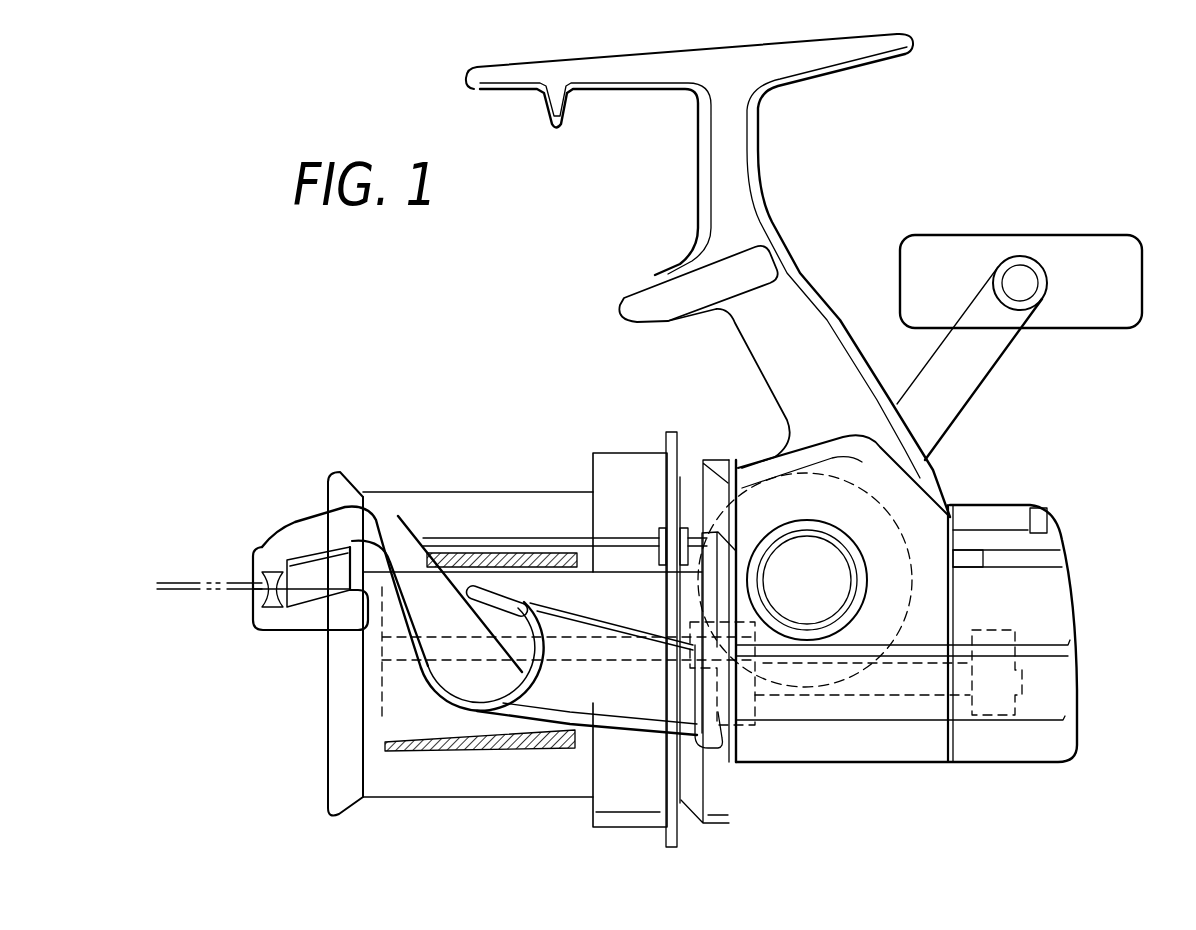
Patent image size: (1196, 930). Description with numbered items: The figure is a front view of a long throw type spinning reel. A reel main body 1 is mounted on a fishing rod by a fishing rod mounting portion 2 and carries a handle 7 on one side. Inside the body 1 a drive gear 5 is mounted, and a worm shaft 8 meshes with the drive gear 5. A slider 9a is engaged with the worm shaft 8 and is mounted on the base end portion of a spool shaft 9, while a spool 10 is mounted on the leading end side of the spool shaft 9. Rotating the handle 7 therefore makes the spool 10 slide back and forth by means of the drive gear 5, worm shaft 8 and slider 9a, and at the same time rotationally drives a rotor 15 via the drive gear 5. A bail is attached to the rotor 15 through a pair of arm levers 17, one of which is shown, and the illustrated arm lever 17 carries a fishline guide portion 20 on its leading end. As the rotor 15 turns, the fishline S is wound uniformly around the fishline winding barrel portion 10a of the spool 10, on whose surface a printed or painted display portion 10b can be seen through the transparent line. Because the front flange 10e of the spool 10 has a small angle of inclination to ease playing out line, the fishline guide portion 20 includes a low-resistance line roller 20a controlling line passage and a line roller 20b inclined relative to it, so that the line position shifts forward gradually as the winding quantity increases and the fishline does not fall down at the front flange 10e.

The reel main body 1 is at (955, 162).
The fishing rod mounting portion 2 is at (835, 68).
The drive gear 5 is at (882, 504).
The handle 7 is at (1097, 248).
The worm shaft 8 is at (900, 690).
The spool shaft 9 is at (392, 650).
The slider 9a is at (1008, 715).
The spool 10 is at (370, 788).
The fishline winding barrel portion 10a is at (538, 500).
The display portion 10b is at (456, 490).
The front flange 10e is at (342, 487).
The rotor 15 is at (727, 820).
The arm lever 17 is at (262, 546).
The fishline guide portion 20 is at (283, 648).
The line roller 20a is at (256, 576).
The line roller 20b is at (308, 566).
The fishline S is at (176, 592).